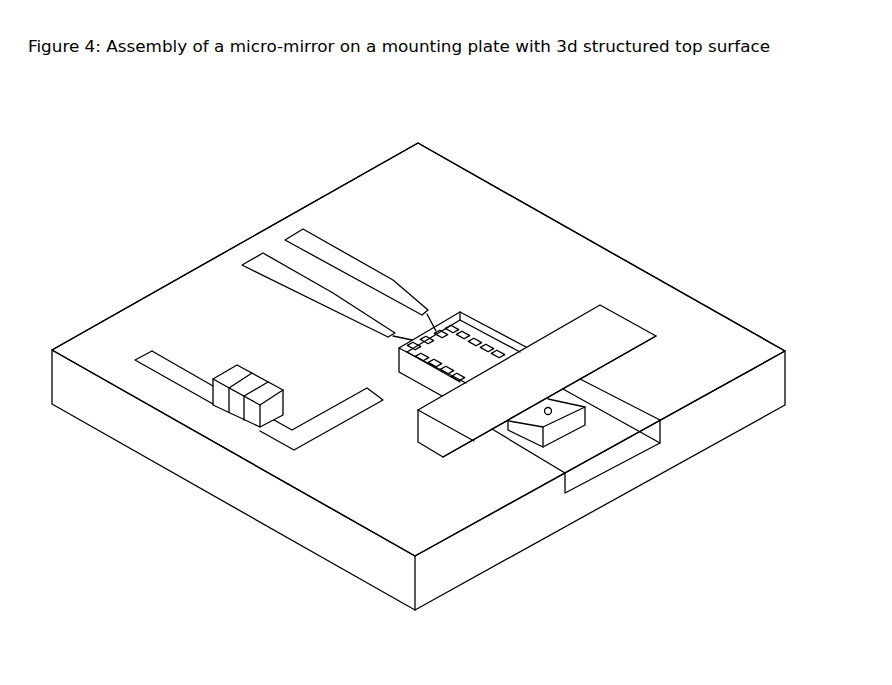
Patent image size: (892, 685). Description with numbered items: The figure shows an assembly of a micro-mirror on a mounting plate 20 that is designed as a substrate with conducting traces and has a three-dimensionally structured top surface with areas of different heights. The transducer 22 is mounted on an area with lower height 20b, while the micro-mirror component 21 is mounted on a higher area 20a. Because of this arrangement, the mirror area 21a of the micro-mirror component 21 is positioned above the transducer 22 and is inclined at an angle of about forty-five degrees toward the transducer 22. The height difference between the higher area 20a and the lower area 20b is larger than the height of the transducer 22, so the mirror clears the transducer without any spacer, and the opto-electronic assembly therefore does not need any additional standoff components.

The mounting plate 20 is at (517, 247).
The higher area 20a is at (687, 372).
The area with lower height 20b is at (603, 455).
The micro-mirror component 21 is at (459, 400).
The mirror area 21a is at (409, 462).
The transducer 22 is at (553, 432).